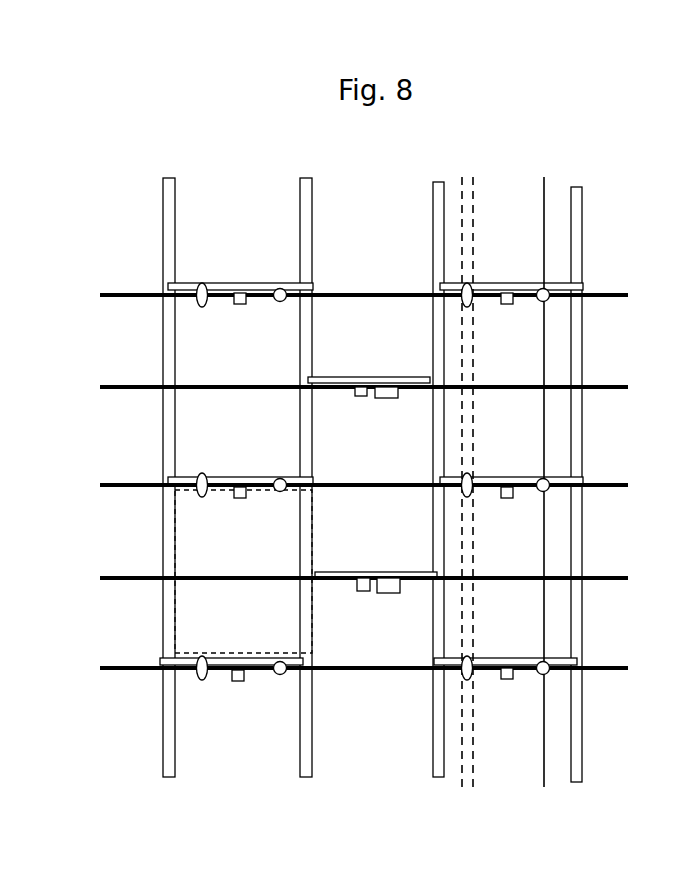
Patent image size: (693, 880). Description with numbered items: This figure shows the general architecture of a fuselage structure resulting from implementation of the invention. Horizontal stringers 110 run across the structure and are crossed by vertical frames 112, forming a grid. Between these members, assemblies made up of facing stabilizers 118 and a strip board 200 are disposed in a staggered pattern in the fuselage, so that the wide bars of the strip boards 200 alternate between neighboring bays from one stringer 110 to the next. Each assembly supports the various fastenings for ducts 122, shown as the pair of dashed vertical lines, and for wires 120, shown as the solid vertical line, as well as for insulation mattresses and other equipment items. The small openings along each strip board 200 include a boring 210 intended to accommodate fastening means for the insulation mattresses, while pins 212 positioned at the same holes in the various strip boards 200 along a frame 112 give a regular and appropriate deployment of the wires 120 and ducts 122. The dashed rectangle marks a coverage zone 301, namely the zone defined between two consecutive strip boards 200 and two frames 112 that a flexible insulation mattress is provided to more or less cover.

The stringer 110 is at (377, 480).
The frame 112 is at (374, 468).
The stabilizer 118 is at (226, 283).
The strip board 200 is at (371, 438).
The wire 120 is at (541, 187).
The duct 122 is at (202, 307).
The boring 210 is at (358, 396).
The pin 212 is at (399, 461).
The coverage zone 301 is at (175, 612).